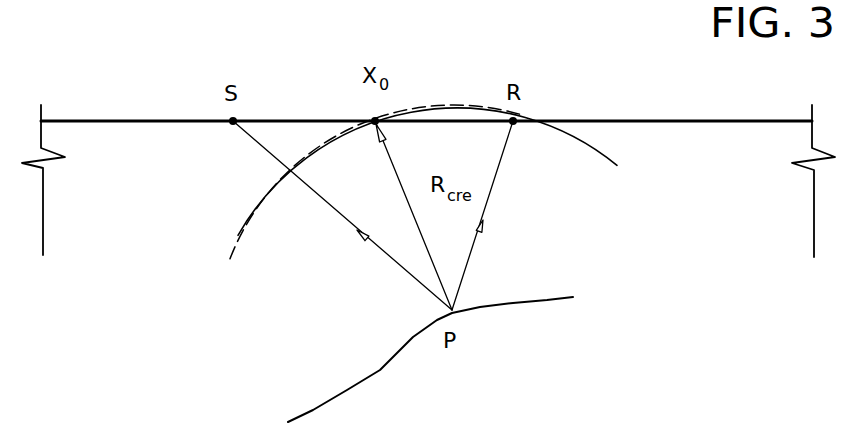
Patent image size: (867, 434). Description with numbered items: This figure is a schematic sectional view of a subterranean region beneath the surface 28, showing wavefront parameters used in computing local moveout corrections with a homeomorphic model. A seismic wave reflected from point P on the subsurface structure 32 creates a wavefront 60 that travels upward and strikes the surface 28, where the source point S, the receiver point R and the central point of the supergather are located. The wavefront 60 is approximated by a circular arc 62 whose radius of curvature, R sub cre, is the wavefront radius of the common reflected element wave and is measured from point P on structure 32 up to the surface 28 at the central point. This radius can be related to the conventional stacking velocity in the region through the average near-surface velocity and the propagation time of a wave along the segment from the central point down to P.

The surface 28 is at (629, 121).
The structure 32 is at (537, 303).
The wavefront 60 is at (238, 238).
The circular arc 62 is at (602, 158).